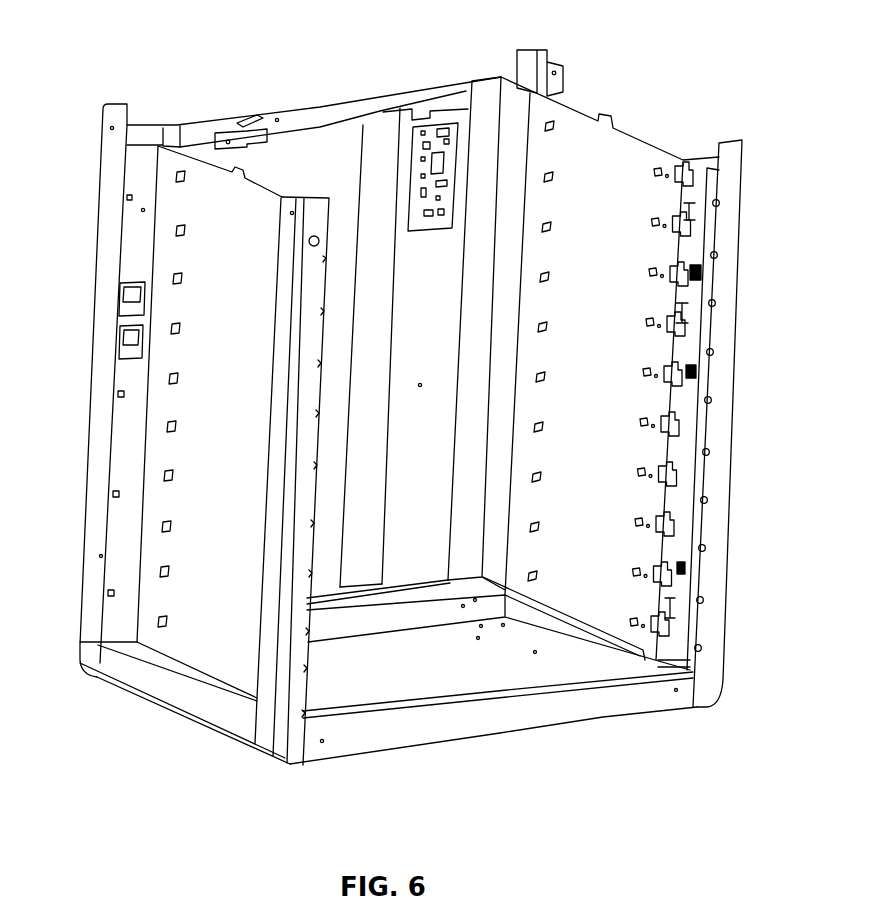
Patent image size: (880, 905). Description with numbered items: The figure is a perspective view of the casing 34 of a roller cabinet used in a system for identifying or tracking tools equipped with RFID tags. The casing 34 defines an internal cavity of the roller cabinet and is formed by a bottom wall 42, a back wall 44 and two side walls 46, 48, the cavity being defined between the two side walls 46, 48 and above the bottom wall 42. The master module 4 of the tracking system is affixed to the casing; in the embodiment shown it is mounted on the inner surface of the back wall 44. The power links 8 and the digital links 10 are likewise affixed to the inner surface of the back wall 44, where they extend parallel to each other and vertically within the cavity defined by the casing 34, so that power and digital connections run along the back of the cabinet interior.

The casing 34 is at (243, 97).
The back wall 44 is at (246, 167).
The side wall 48 is at (587, 110).
The master module 4 is at (448, 204).
The side wall 46 is at (212, 440).
The power links 8 is at (512, 445).
The digital links 10 is at (368, 512).
The bottom wall 42 is at (391, 758).